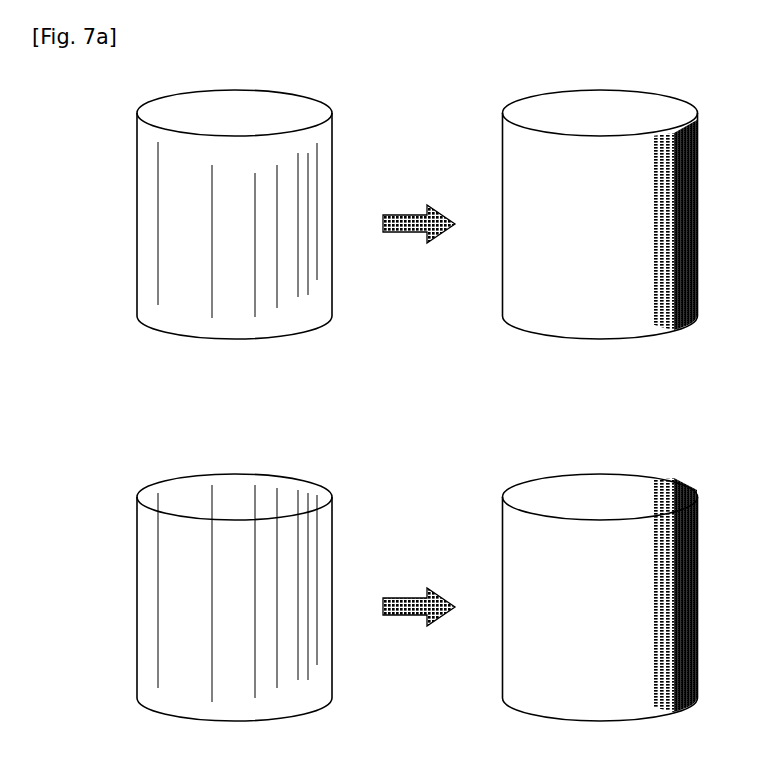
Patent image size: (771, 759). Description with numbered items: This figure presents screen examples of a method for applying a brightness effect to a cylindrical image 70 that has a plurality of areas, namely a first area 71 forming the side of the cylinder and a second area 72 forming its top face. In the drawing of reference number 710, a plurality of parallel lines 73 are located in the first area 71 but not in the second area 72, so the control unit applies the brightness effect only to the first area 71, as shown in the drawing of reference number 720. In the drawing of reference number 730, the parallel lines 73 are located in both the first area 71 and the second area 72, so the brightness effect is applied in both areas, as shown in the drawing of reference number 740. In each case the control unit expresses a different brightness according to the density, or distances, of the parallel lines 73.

The cylindrical image 70 is at (184, 214).
The first area 71 is at (73, 94).
The second area 72 is at (153, 112).
The parallel lines 73 is at (317, 320).
The drawing of reference number 710 is at (189, 210).
The drawing of reference number 720 is at (660, 93).
The drawing of reference number 730 is at (153, 495).
The drawing of reference number 740 is at (660, 477).